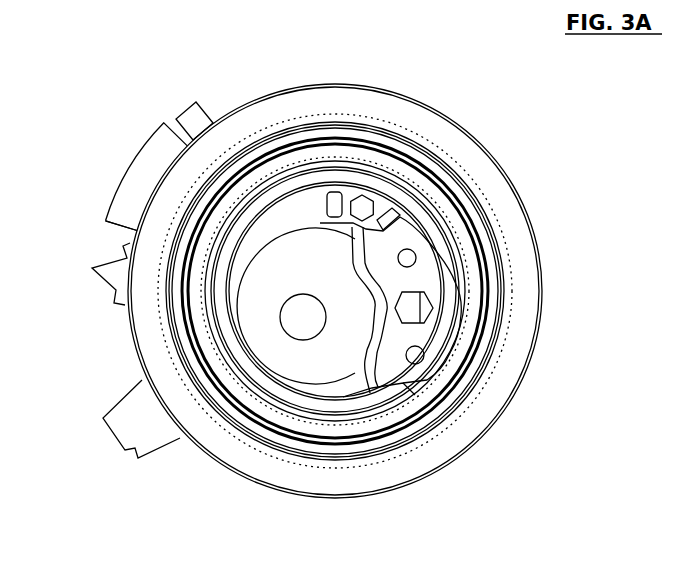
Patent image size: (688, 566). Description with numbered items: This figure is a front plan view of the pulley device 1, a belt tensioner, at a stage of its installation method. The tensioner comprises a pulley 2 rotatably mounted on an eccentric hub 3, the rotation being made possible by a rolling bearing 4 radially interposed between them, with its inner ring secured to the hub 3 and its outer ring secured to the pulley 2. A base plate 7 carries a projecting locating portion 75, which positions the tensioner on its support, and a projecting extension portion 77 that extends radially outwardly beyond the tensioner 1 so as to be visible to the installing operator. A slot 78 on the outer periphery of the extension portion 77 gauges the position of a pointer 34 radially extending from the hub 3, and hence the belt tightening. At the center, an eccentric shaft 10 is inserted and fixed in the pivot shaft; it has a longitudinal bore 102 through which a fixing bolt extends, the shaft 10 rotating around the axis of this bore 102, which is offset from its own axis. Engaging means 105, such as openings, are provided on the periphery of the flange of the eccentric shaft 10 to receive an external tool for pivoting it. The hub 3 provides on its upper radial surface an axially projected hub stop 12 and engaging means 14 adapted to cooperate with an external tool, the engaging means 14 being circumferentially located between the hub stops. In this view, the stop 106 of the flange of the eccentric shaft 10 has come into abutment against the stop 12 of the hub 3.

The pulley device 1 is at (146, 112).
The pulley 2 is at (215, 450).
The eccentric hub 3 is at (291, 208).
The rolling bearing 4 is at (322, 436).
The base plate 7 is at (98, 209).
The eccentric shaft 10 is at (352, 398).
The hub stop 12 is at (405, 212).
The engaging means 14 is at (362, 194).
The pointer 34 is at (97, 281).
The projecting locating portion 75 is at (135, 448).
The projecting extension portion 77 is at (115, 178).
The slot 78 is at (182, 112).
The longitudinal bore 102 is at (300, 340).
The engaging means 105 is at (448, 296).
The stop 106 is at (425, 222).